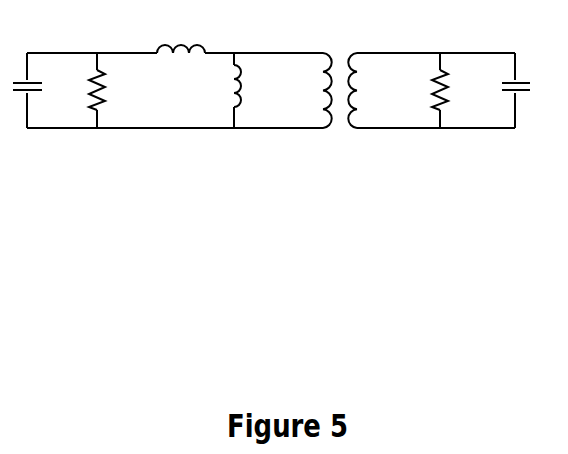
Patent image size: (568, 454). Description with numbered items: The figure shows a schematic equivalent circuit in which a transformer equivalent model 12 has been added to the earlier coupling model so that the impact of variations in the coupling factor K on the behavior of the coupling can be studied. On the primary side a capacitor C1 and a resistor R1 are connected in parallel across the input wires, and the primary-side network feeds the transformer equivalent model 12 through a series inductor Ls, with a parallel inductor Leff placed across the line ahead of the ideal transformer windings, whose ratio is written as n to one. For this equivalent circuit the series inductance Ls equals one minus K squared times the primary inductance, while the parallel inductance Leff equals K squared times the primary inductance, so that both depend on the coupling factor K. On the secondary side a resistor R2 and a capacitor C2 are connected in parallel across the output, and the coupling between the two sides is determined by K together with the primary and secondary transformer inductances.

The transformer equivalent model 12 is at (269, 109).
The primary-side capacitor C1 is at (37, 91).
The primary-side resistor R1 is at (107, 90).
The series inductor Ls is at (181, 39).
The parallel inductor Leff is at (250, 86).
The secondary-side resistor R2 is at (450, 90).
The secondary-side capacitor C2 is at (526, 91).